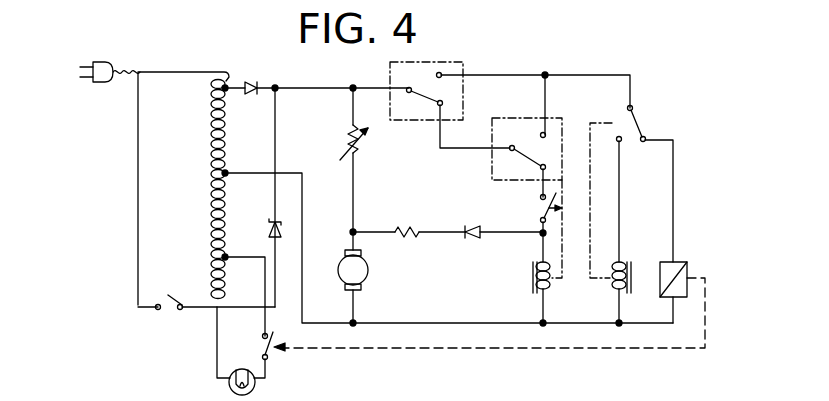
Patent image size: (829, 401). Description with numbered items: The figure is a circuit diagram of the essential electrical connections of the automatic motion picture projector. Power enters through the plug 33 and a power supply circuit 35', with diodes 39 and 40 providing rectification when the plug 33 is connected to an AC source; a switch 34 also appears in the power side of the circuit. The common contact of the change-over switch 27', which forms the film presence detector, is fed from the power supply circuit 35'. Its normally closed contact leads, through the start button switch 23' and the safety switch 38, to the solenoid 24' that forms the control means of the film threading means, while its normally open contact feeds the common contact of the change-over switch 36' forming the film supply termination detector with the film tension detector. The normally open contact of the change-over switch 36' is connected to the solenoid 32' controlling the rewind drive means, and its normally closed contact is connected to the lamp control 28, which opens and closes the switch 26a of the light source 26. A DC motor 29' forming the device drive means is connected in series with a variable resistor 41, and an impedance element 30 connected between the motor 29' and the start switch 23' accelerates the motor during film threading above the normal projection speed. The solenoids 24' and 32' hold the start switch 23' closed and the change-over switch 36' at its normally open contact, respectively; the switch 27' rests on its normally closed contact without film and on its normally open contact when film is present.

The plug 33 is at (101, 83).
The power supply circuit 35' is at (186, 189).
The diode 39 is at (252, 96).
The diode 40 is at (275, 218).
The switch 34 is at (168, 292).
The variable resistor 41 is at (350, 140).
The change-over switch 27' is at (425, 116).
The safety switch 38 is at (552, 118).
The change-over switch 36' is at (641, 185).
The DC motor 29' is at (336, 250).
The impedance element 30 is at (467, 240).
The start button switch 23' is at (521, 207).
The solenoid 24' is at (528, 253).
The solenoid 32' is at (640, 252).
The lamp control 28 is at (682, 262).
The light source 26 is at (245, 370).
The switch of the light source 26a is at (276, 355).